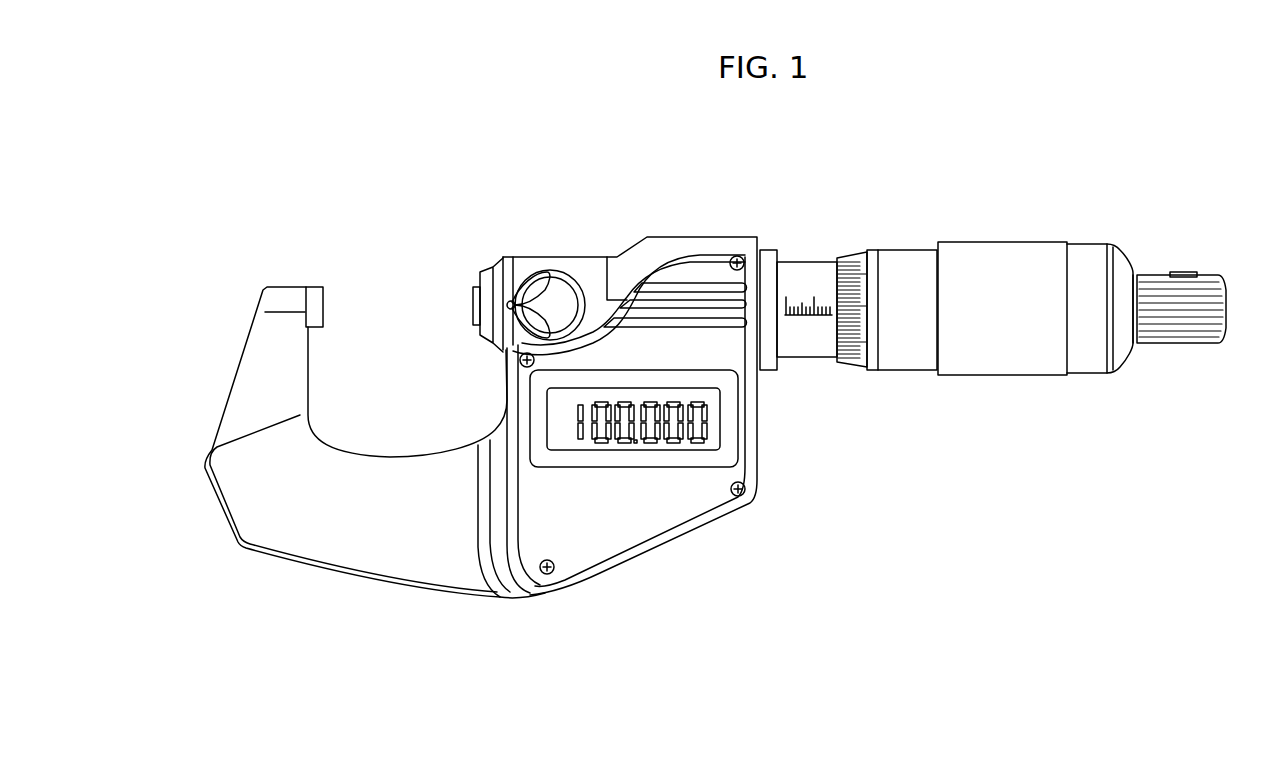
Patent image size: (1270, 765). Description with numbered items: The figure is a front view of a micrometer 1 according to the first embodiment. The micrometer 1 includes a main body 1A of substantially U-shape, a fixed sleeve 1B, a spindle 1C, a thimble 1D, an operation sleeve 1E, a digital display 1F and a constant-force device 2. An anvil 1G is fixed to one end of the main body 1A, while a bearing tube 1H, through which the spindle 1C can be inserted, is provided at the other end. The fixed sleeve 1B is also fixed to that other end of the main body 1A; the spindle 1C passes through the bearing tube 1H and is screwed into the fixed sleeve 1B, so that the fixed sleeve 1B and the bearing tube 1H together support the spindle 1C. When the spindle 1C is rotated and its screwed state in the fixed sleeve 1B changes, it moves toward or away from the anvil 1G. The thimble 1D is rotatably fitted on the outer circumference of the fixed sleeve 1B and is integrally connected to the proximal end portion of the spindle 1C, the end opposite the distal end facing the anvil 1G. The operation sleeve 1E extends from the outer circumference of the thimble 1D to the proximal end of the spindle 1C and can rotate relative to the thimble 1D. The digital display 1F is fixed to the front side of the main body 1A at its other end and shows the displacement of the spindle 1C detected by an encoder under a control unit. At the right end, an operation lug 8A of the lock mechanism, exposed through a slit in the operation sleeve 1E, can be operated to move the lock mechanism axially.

The micrometer 1 is at (382, 148).
The main body 1A is at (390, 584).
The fixed sleeve 1B is at (813, 270).
The spindle 1C is at (470, 303).
The thimble 1D is at (913, 257).
The operation sleeve 1E is at (1027, 248).
The digital display 1F is at (723, 430).
The anvil 1G is at (313, 287).
The bearing tube 1H is at (485, 265).
The constant-force device 2 is at (1188, 277).
The operation lug 8A is at (1179, 307).